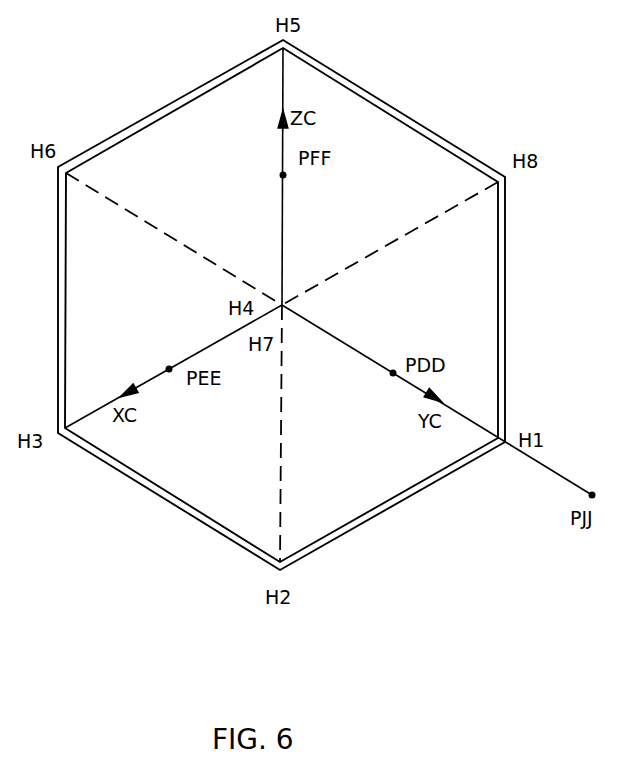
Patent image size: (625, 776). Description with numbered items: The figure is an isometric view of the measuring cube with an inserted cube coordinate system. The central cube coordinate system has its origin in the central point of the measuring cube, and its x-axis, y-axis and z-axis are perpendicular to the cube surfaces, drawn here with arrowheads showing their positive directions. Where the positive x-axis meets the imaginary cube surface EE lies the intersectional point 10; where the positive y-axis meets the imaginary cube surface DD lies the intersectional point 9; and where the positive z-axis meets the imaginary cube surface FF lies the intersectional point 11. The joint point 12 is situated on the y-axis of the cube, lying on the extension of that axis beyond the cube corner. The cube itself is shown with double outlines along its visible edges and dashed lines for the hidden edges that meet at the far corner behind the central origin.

The point PDD on Y axis 9 is at (381, 381).
The point PEE on X axis 10 is at (179, 356).
The point PFF on Z axis 11 is at (271, 185).
The point PJJ 12 is at (597, 476).